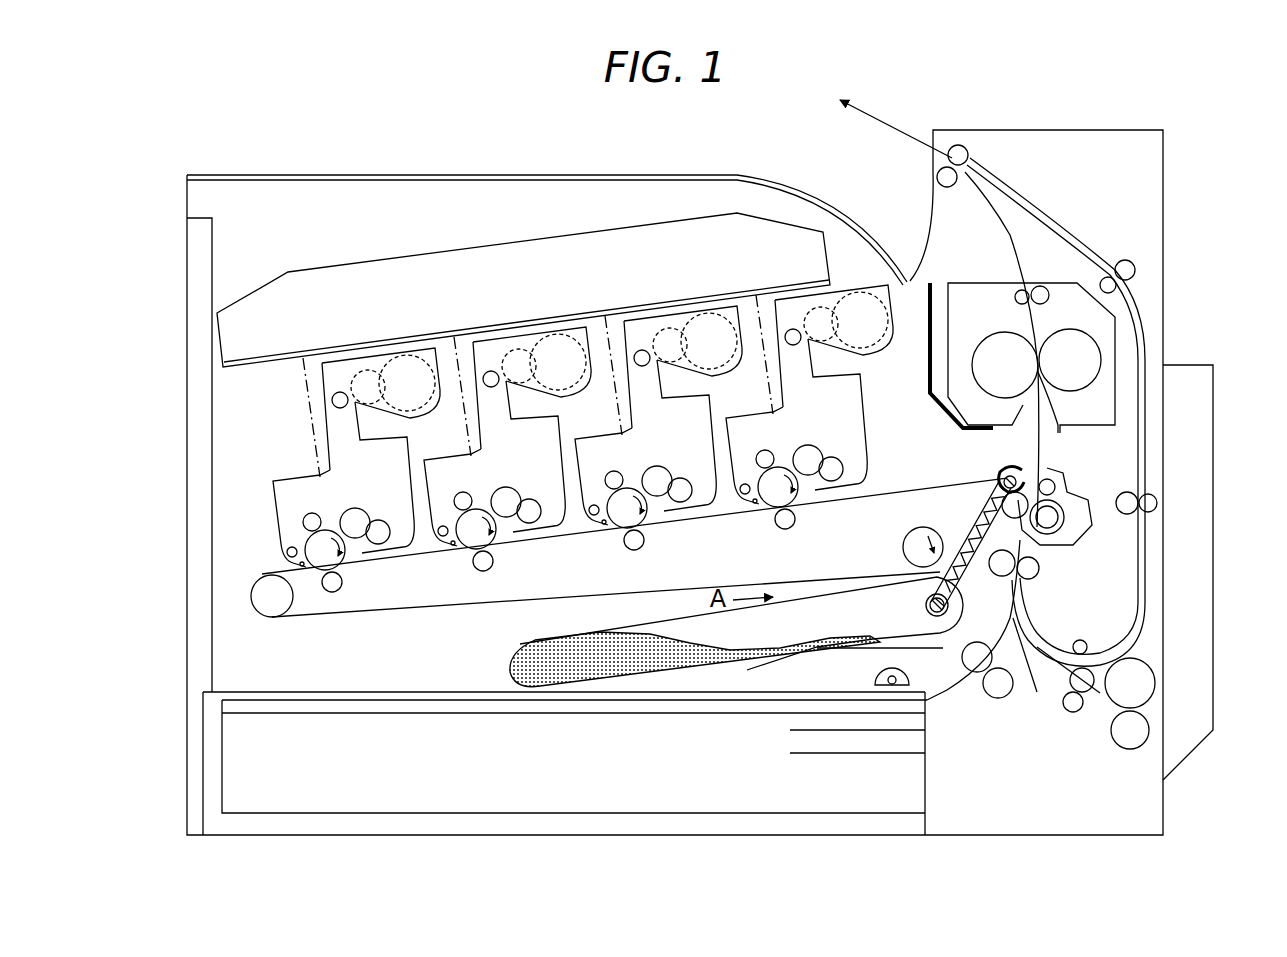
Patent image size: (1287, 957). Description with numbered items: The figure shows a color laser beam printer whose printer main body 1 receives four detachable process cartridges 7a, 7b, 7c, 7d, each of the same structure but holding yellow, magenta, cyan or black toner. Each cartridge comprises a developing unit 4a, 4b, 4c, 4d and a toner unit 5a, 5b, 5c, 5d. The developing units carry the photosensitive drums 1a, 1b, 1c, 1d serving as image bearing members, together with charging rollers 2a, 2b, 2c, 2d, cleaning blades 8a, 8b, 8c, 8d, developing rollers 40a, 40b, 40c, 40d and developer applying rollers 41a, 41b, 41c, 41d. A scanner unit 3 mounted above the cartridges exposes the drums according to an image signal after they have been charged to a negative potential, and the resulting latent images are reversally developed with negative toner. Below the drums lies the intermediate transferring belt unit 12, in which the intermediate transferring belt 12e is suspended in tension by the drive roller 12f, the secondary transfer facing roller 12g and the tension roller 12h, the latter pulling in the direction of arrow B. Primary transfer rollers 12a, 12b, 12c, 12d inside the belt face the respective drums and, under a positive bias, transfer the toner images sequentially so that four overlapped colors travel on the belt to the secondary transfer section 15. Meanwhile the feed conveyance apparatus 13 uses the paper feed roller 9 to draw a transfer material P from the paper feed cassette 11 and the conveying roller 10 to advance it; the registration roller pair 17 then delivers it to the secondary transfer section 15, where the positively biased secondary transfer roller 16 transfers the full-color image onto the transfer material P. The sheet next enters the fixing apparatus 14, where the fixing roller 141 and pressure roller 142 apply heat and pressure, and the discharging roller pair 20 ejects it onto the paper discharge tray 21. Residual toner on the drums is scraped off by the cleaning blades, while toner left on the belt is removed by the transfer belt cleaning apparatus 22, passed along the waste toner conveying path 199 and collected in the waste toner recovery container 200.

The printer main body 1 is at (1082, 130).
The scanner unit 3 is at (490, 262).
The paper feed roller 9 is at (875, 685).
The conveying roller 10 is at (975, 672).
The paper feed cassette 11 is at (648, 813).
The intermediate transferring belt unit 12 is at (440, 620).
The primary transfer roller 12a is at (784, 537).
The primary transfer roller 12b is at (633, 558).
The primary transfer roller 12c is at (483, 578).
The primary transfer roller 12d is at (336, 601).
The intermediate transferring belt 12e is at (557, 603).
The drive roller 12f is at (257, 607).
The secondary transfer facing roller 12g is at (1020, 484).
The tension roller 12h is at (918, 526).
The feed conveyance apparatus 13 is at (993, 713).
The fixing apparatus 14 is at (985, 300).
The fixing roller 141 is at (1010, 342).
The pressure roller 142 is at (1070, 350).
The secondary transfer section 15 is at (1040, 472).
The secondary transfer roller 16 is at (1040, 537).
The registration roller pair 17 is at (1032, 568).
The discharging roller pair 20 is at (958, 146).
The paper discharge tray 21 is at (690, 175).
The transfer belt cleaning apparatus 22 is at (1003, 472).
The waste toner conveying path 199 is at (980, 515).
The waste toner recovery container 200 is at (858, 634).
The photosensitive drum 1a is at (798, 504).
The photosensitive drum 1b is at (647, 525).
The photosensitive drum 1c is at (495, 546).
The photosensitive drum 1d is at (340, 565).
The charging roller 2a is at (753, 442).
The charging roller 2b is at (602, 463).
The charging roller 2c is at (452, 484).
The charging roller 2d is at (306, 514).
The developing unit 4a is at (803, 474).
The developing unit 4b is at (652, 495).
The developing unit 4c is at (500, 516).
The developing unit 4d is at (403, 548).
The toner unit 5a is at (829, 326).
The toner unit 5b is at (678, 347).
The toner unit 5c is at (528, 368).
The toner unit 5d is at (337, 368).
The process cartridge 7a is at (860, 414).
The process cartridge 7b is at (709, 435).
The process cartridge 7c is at (558, 456).
The process cartridge 7d is at (416, 456).
The cleaning blade 8a is at (771, 530).
The cleaning blade 8b is at (620, 551).
The cleaning blade 8c is at (470, 572).
The cleaning blade 8d is at (326, 591).
The developing roller 40a is at (812, 431).
The developing roller 40b is at (662, 452).
The developing roller 40c is at (511, 473).
The developing roller 40d is at (355, 508).
The developer applying roller 41a is at (842, 446).
The developer applying roller 41b is at (691, 467).
The developer applying roller 41c is at (540, 488).
The developer applying roller 41d is at (382, 520).
The arrow B is at (923, 547).
The transfer material P is at (1012, 605).